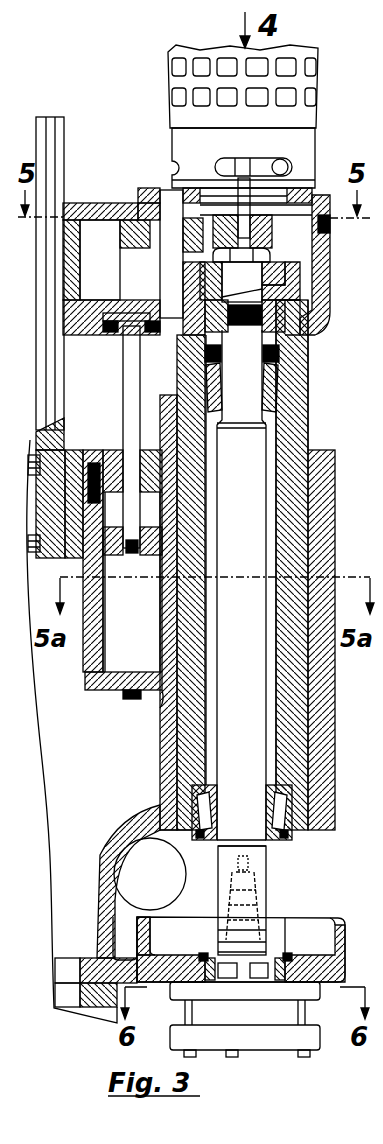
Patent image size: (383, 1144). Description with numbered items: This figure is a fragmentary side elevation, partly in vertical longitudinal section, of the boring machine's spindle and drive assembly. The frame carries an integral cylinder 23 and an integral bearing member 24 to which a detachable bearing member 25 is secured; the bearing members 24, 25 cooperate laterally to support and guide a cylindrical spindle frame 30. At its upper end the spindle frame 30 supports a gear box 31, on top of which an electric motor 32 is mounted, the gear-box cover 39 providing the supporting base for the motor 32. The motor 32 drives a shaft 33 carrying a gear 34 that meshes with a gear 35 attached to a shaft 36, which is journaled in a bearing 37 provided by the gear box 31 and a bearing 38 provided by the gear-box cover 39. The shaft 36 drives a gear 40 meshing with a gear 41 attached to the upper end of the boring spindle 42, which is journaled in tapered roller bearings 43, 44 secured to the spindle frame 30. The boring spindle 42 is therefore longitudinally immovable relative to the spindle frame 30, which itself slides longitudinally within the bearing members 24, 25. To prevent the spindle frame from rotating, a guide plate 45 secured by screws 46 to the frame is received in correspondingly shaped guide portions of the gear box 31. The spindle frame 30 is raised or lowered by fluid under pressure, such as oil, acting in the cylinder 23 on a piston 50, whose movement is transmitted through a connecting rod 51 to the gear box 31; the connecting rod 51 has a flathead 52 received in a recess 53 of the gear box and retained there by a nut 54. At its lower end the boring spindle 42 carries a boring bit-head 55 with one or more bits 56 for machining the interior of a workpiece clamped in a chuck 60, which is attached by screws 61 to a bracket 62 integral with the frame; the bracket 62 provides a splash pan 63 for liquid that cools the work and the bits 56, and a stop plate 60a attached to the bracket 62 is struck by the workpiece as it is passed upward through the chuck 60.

The cylinder 23 is at (96, 668).
The integral bearing member 24 is at (174, 743).
The detachable bearing member 25 is at (328, 741).
The spindle frame 30 is at (293, 712).
The gear box 31 is at (325, 265).
The electric motor 32 is at (318, 110).
The shaft 33 is at (245, 210).
The gear 34 is at (268, 240).
The gear 35 is at (132, 215).
The shaft 36 is at (166, 255).
The bearing 37 is at (203, 285).
The bearing 38 is at (156, 198).
The gear-box cover 39 is at (312, 188).
The gear 40 is at (300, 318).
The gear 41 is at (290, 280).
The boring spindle 42 is at (247, 365).
The tapered roller bearing 43 is at (204, 800).
The tapered roller bearing 44 is at (278, 398).
The guide plate 45 is at (58, 408).
The screws 46 is at (46, 441).
The piston 50 is at (108, 547).
The connecting rod 51 is at (133, 436).
The flathead 52 is at (130, 322).
The recess 53 is at (163, 335).
The nut 54 is at (105, 335).
The boring bit-head 55 is at (260, 940).
The bits 56 is at (271, 950).
The chuck 60 is at (320, 1085).
The stop plate 60a is at (205, 955).
The screws 61 is at (233, 1052).
The bracket 62 is at (340, 972).
The splash pan 63 is at (313, 950).